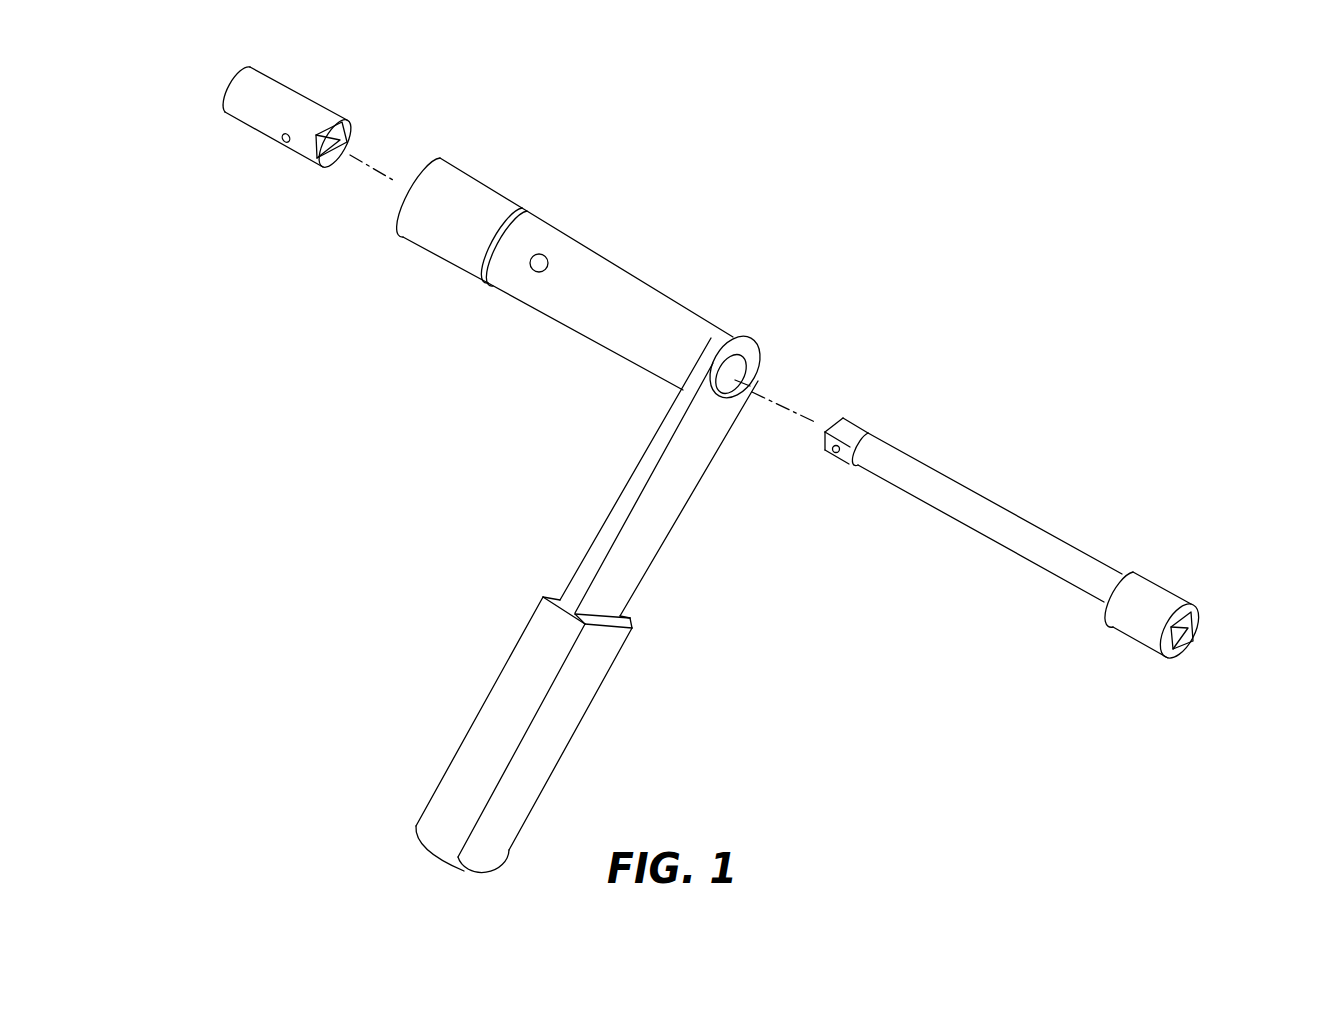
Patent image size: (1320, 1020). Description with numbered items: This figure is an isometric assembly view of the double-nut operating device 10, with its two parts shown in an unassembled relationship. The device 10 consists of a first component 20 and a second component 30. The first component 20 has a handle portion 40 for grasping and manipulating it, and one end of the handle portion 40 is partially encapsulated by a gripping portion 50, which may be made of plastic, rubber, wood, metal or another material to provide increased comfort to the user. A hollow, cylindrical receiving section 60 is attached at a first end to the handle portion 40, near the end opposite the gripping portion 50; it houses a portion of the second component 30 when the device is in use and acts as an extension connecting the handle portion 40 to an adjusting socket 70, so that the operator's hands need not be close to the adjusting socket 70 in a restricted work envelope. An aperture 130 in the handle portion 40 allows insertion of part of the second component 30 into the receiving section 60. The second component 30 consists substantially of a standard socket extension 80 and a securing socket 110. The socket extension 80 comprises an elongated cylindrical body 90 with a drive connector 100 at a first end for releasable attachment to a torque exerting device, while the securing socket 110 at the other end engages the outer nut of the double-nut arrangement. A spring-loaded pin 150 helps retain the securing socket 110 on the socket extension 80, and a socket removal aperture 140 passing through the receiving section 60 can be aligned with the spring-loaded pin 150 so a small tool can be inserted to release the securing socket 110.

The double-nut operating device 10 is at (1040, 183).
The first component 20 is at (481, 434).
The second component 30 is at (1060, 430).
The handle portion 40 is at (654, 602).
The gripping portion 50 is at (547, 750).
The receiving section 60 is at (608, 278).
The adjusting socket 70 is at (433, 233).
The socket extension 80 is at (940, 535).
The elongated cylindrical body 90 is at (935, 487).
The drive connector 100 is at (1143, 597).
The securing socket 110 is at (268, 85).
The aperture 130 is at (745, 363).
The socket removal aperture 140 is at (537, 271).
The spring-loaded pin 150 is at (283, 147).